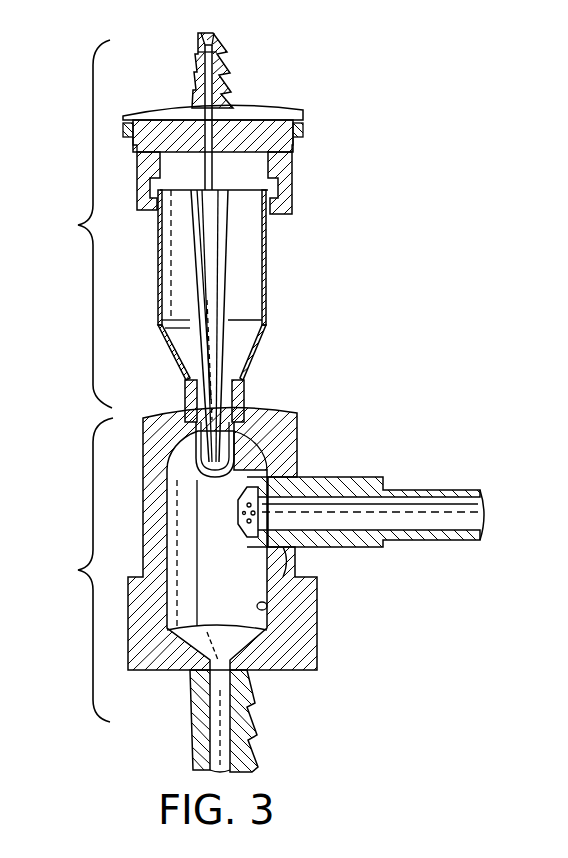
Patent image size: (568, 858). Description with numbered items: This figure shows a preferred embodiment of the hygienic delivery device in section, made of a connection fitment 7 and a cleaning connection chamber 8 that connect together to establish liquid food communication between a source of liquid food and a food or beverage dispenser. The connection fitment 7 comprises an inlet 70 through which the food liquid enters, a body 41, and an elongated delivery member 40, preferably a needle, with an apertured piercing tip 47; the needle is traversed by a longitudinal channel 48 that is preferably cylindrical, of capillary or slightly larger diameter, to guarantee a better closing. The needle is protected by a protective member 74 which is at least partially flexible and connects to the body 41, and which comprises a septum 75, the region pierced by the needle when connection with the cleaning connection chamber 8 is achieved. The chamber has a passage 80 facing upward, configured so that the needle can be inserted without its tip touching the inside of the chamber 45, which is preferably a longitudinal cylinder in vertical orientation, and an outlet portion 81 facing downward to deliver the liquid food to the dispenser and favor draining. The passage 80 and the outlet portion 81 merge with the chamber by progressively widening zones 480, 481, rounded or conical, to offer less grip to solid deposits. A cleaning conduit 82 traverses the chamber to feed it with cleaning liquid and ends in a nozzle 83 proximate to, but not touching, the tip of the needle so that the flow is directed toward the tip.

The connection fitment 7 is at (66, 226).
The cleaning connection chamber 8 is at (66, 573).
The elongated delivery member 40 is at (229, 247).
The body 41 is at (319, 114).
The inside of the chamber 45 is at (298, 609).
The apertured piercing tip 47 is at (286, 424).
The longitudinal channel 48 is at (214, 295).
The inlet 70 is at (222, 37).
The protective member 74 is at (158, 262).
The septum 75 is at (272, 449).
The passage 80 is at (244, 391).
The outlet portion 81 is at (183, 675).
The cleaning conduit 82 is at (434, 482).
The nozzle 83 is at (297, 547).
The progressively widening zone 480 is at (147, 440).
The progressively widening zone 481 is at (243, 642).